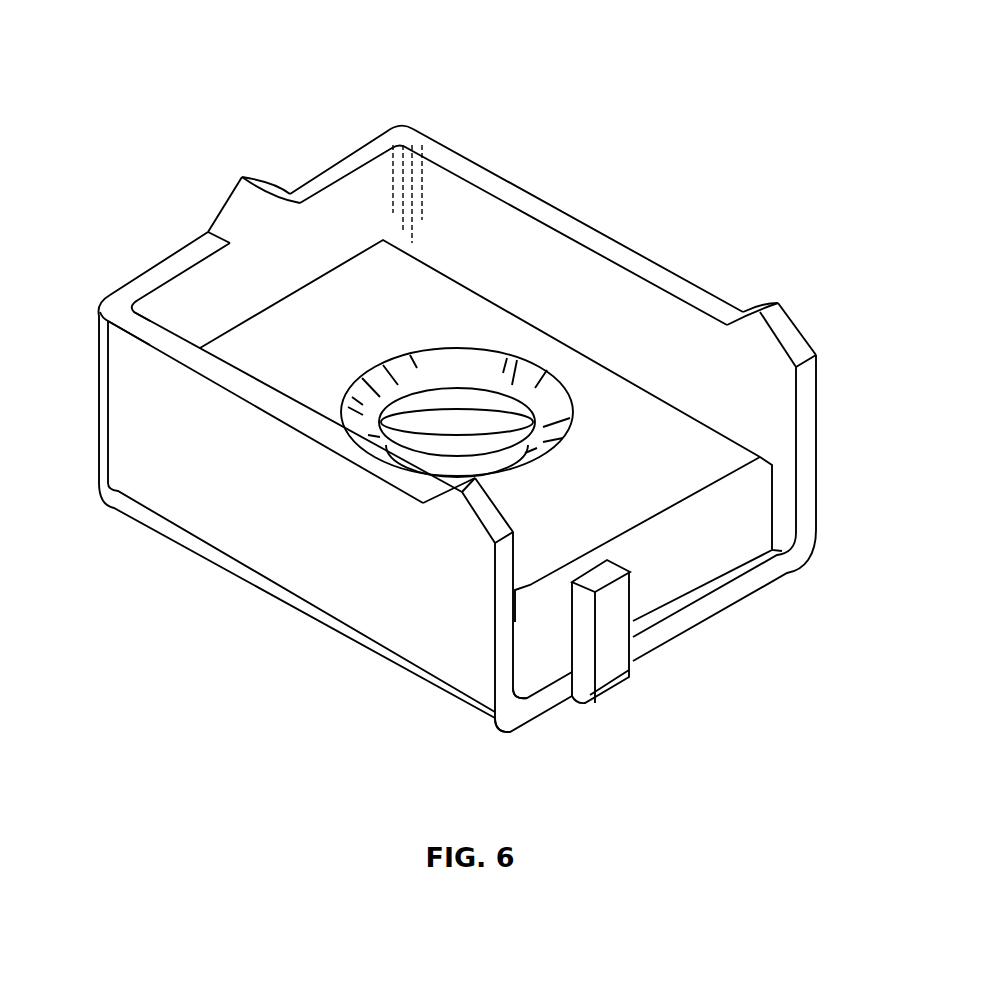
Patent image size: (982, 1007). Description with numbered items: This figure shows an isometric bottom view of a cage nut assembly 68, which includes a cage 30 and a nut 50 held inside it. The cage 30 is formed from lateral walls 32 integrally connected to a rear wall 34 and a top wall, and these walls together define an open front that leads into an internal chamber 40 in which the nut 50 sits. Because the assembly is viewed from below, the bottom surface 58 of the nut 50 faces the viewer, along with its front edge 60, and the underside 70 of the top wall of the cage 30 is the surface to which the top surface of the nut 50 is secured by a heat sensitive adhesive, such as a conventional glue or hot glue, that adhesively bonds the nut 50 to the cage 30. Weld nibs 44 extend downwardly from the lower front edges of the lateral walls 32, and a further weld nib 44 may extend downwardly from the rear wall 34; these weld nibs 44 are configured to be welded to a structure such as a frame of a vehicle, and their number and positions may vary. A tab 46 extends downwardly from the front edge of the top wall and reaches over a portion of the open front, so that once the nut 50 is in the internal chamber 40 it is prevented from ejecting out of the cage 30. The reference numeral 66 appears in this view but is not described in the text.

The cage nut assembly 68 is at (133, 86).
The cage 30 is at (122, 409).
The lateral walls 32 is at (305, 545).
The rear wall 34 is at (118, 287).
The internal chamber 40 is at (675, 408).
The weld nibs 44 is at (265, 190).
The tab 46 is at (613, 620).
The nut 50 is at (577, 353).
The bottom surface 58 is at (383, 300).
The front edge 60 is at (713, 523).
The threaded bore 66 is at (463, 448).
The underside 70 is at (778, 553).